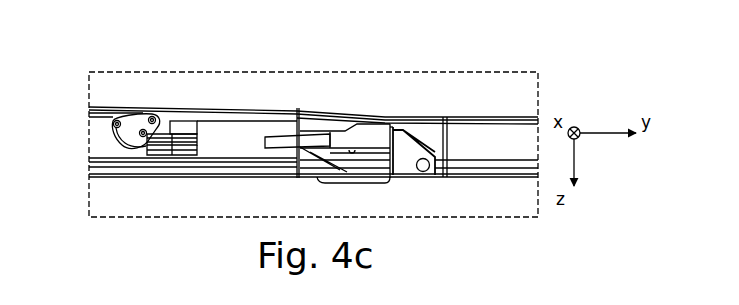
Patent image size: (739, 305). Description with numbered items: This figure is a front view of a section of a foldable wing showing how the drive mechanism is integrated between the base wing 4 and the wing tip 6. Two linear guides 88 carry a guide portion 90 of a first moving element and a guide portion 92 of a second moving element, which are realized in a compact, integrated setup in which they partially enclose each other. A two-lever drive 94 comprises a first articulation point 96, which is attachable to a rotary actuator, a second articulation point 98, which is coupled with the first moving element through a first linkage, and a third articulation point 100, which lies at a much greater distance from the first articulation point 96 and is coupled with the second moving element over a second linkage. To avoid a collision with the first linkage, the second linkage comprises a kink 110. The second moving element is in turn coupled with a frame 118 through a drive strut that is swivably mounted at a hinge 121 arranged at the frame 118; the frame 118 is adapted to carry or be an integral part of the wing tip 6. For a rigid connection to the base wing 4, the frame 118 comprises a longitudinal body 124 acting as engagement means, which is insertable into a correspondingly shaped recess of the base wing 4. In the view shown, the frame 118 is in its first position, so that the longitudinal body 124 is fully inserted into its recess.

The base wing 4 is at (257, 125).
The wing tip 6 is at (432, 140).
The linear guides 88 is at (220, 152).
The guide portion 90 is at (193, 119).
The guide portion 92 is at (168, 154).
The two-lever drive 94 is at (131, 127).
The first articulation point 96 is at (152, 114).
The second articulation point 98 is at (144, 141).
The third articulation point 100 is at (114, 123).
The kink 110 is at (120, 103).
The frame 118 is at (377, 142).
The hinge 121 is at (423, 180).
The longitudinal body 124 is at (308, 142).